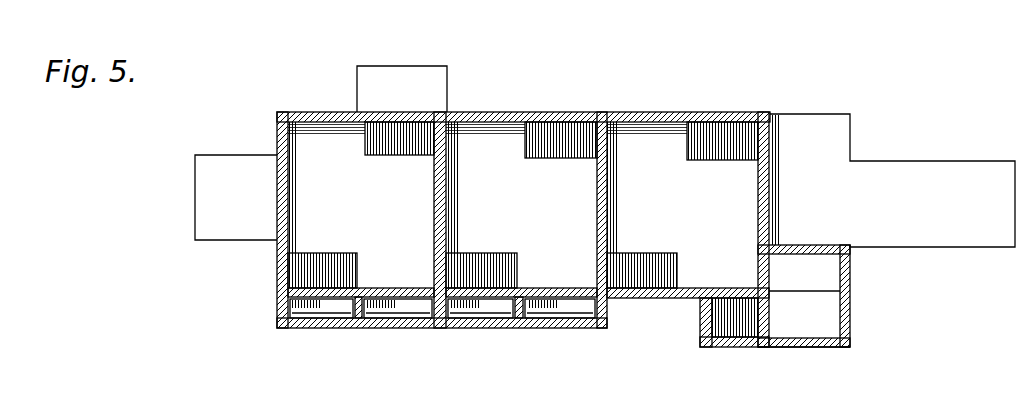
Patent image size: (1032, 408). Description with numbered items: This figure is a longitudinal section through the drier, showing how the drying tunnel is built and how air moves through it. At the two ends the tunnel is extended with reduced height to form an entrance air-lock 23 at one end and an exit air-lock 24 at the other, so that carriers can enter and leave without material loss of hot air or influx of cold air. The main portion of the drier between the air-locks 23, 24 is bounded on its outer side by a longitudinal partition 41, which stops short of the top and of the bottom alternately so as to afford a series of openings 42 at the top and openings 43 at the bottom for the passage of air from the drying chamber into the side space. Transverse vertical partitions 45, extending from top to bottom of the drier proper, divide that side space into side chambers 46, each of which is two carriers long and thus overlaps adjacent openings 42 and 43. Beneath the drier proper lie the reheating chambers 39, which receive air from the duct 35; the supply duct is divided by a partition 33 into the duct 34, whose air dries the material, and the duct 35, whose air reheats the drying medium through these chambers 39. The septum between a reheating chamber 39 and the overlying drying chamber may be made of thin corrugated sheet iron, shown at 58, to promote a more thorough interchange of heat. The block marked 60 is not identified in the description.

The entrance air-locks 23 is at (242, 155).
The exit air-locks 24 is at (955, 162).
The partition 33 is at (769, 314).
The duct 34 is at (816, 338).
The duct 35 is at (706, 319).
The reheating chambers 39 is at (327, 319).
The partitions 41 is at (348, 124).
The openings 42 is at (395, 162).
The openings 43 is at (344, 253).
The transverse vertical partitions 45 is at (451, 193).
The side chambers 46 is at (362, 206).
The corrugated sheet iron septum 58 is at (434, 274).
The terminal block 60 is at (413, 72).